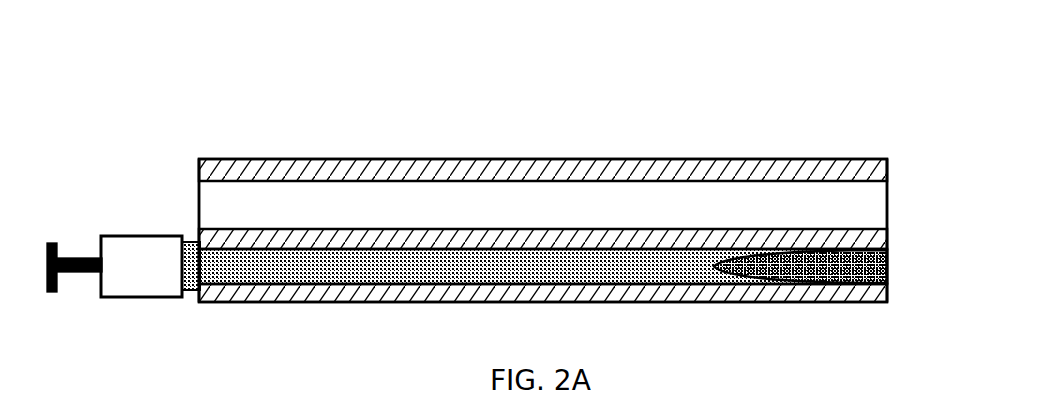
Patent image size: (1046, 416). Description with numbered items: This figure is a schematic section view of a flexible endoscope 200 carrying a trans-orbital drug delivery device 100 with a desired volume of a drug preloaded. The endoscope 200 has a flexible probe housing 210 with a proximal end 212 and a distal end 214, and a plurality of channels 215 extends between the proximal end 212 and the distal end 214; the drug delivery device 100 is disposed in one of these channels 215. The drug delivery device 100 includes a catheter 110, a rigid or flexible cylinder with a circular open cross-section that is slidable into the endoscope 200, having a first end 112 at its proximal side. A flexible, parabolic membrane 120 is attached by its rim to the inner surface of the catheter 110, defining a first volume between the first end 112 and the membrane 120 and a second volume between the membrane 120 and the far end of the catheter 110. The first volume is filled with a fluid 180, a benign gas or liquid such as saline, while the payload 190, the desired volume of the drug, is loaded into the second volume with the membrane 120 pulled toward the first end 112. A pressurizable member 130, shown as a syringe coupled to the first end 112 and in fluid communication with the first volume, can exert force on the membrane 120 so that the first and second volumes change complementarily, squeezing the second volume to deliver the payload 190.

The trans-orbital drug delivery device 100 is at (104, 213).
The catheter 110 is at (425, 237).
The first end 112 is at (203, 302).
The flexible membrane 120 is at (727, 258).
The pressurizable member 130 is at (114, 291).
The fluid 180 is at (597, 265).
The payload 190 is at (800, 262).
The flexible endoscope 200 is at (562, 38).
The flexible probe housing 210 is at (560, 158).
The proximal end 212 is at (199, 170).
The distal end 214 is at (888, 169).
The plurality of channels 215 is at (635, 203).